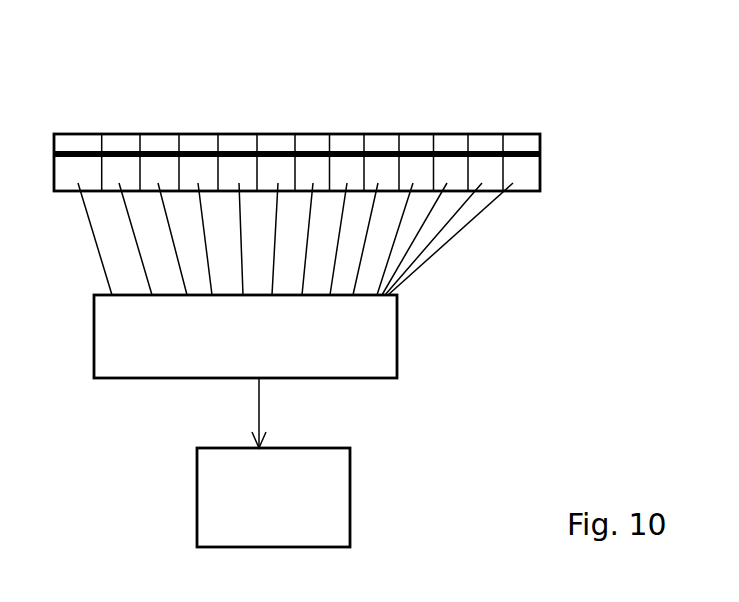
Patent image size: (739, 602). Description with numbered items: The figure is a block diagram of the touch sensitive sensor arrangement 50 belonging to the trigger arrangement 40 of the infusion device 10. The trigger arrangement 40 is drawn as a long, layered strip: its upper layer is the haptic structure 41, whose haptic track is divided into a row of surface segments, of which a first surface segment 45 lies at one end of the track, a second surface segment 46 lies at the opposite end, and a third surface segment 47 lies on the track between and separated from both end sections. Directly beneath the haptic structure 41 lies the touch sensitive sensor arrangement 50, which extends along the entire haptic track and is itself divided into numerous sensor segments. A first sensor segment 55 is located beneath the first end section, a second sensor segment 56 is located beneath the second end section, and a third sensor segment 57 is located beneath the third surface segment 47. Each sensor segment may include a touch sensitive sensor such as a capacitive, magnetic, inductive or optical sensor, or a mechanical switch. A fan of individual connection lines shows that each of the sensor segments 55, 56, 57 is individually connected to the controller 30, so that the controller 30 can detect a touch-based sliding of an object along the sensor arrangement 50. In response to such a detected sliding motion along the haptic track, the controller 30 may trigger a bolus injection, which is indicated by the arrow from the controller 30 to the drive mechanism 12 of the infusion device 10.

The infusion device 10 is at (502, 388).
The drive mechanism 12 is at (330, 480).
The controller 30 is at (385, 347).
The trigger arrangement 40 is at (354, 96).
The haptic structure 41 is at (556, 142).
The first surface segment 45 is at (82, 140).
The second surface segment 46 is at (521, 140).
The third surface segment 47 is at (278, 143).
The touch sensitive sensor arrangement 50 is at (561, 178).
The first sensor segment 55 is at (64, 183).
The second sensor segment 56 is at (517, 183).
The third sensor segment 57 is at (289, 163).